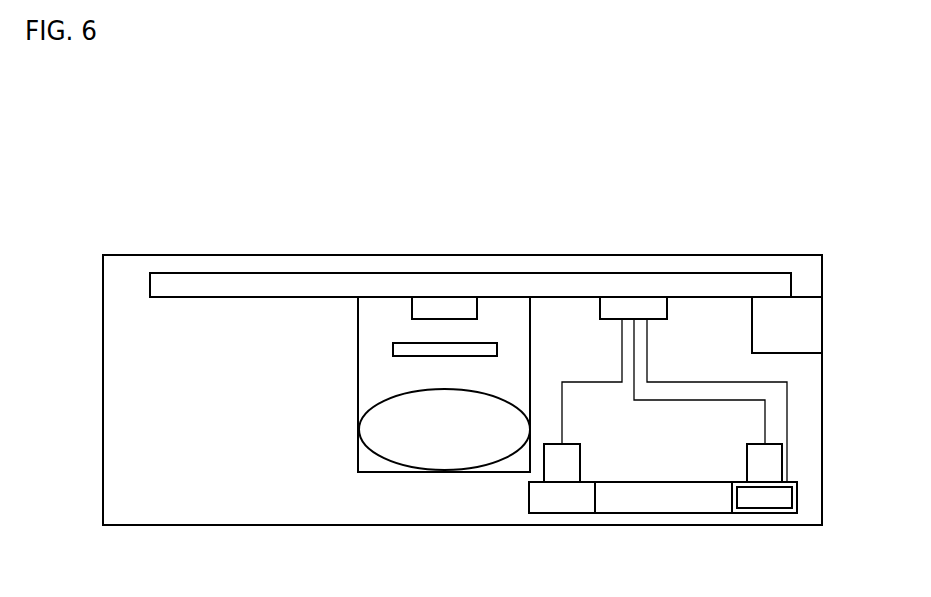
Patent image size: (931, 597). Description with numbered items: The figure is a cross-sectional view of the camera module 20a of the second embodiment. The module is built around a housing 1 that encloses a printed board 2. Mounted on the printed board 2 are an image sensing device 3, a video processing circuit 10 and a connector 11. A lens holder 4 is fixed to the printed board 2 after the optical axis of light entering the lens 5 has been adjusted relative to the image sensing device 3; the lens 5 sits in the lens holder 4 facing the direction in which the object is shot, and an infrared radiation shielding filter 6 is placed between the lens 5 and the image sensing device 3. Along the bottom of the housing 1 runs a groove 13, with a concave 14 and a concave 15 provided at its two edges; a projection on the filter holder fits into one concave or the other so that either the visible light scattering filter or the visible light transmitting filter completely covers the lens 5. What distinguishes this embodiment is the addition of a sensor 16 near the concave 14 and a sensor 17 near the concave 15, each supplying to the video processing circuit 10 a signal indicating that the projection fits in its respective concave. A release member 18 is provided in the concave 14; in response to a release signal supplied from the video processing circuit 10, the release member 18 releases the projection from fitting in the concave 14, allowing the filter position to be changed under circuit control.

The housing 1 is at (113, 325).
The printed board 2 is at (175, 283).
The image sensing device 3 is at (444, 306).
The lens holder 4 is at (359, 393).
The lens 5 is at (360, 431).
The infrared radiation shielding filter 6 is at (393, 348).
The video processing circuit 10 is at (632, 308).
The connector 11 is at (805, 305).
The groove 13 is at (665, 508).
The concave 14 is at (765, 508).
The concave 15 is at (562, 508).
The sensor 16 is at (747, 462).
The sensor 17 is at (573, 462).
The release member 18 is at (790, 497).
The camera module 20a is at (743, 157).